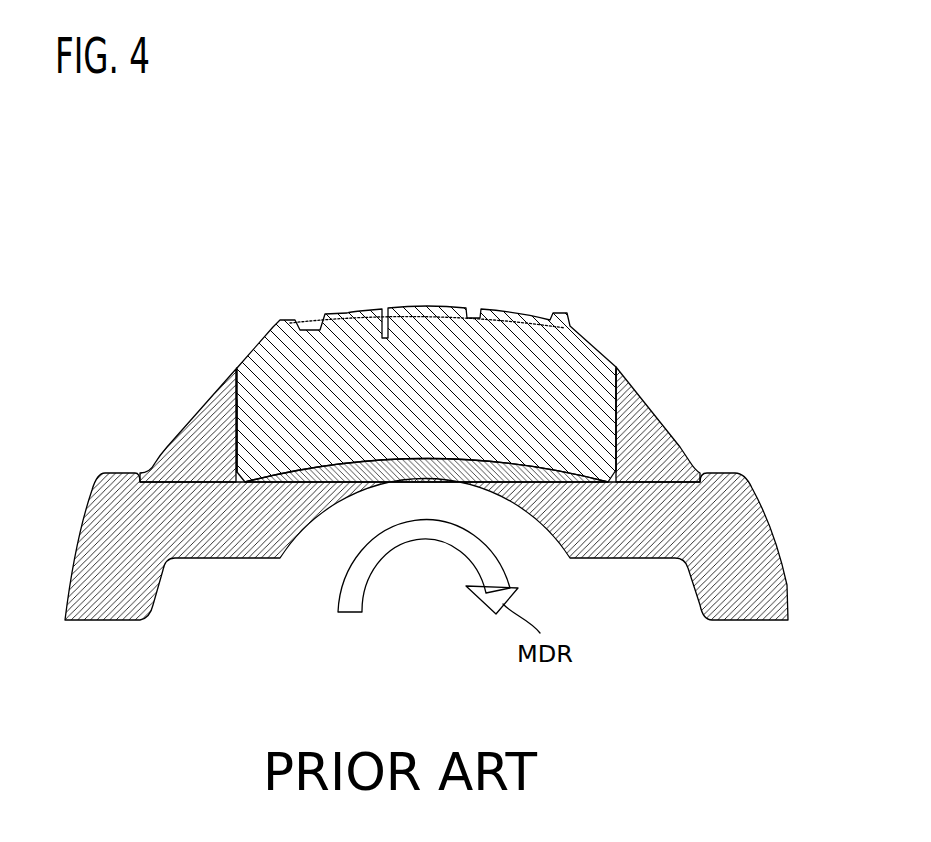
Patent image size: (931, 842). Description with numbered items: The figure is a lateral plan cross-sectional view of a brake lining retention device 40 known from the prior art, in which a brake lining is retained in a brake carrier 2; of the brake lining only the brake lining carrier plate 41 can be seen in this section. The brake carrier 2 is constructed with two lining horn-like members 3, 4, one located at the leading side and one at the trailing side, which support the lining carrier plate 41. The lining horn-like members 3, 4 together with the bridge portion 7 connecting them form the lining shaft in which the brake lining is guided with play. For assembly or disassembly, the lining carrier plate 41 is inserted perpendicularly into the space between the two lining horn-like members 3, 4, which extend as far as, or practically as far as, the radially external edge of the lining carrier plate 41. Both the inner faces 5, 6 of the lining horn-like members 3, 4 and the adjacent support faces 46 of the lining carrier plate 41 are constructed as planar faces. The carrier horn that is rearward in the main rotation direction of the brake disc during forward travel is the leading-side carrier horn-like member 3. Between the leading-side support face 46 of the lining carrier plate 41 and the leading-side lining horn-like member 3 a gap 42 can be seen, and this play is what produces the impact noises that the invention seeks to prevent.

The brake carrier 2 is at (193, 537).
The leading-side lining horn-like member 3 is at (203, 443).
The lining horn-like member 4 is at (632, 440).
The inner face of lining horn-like member 5 is at (237, 417).
The inner face of lining horn-like member 6 is at (615, 404).
The bridge portion 7 is at (392, 477).
The brake lining retention device 40 is at (477, 89).
The brake lining carrier plate 41 is at (476, 340).
The gap 42 is at (235, 366).
The support face 46 is at (234, 398).